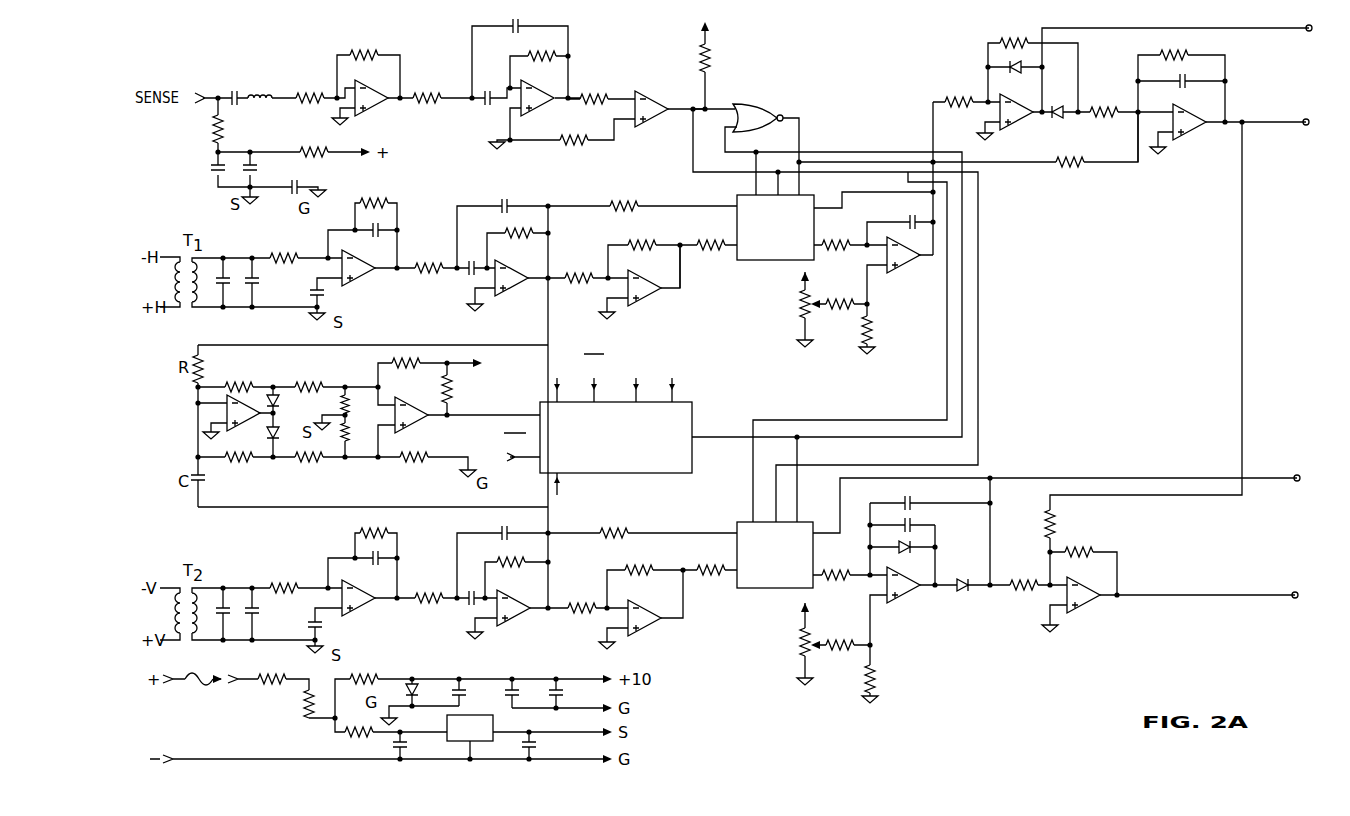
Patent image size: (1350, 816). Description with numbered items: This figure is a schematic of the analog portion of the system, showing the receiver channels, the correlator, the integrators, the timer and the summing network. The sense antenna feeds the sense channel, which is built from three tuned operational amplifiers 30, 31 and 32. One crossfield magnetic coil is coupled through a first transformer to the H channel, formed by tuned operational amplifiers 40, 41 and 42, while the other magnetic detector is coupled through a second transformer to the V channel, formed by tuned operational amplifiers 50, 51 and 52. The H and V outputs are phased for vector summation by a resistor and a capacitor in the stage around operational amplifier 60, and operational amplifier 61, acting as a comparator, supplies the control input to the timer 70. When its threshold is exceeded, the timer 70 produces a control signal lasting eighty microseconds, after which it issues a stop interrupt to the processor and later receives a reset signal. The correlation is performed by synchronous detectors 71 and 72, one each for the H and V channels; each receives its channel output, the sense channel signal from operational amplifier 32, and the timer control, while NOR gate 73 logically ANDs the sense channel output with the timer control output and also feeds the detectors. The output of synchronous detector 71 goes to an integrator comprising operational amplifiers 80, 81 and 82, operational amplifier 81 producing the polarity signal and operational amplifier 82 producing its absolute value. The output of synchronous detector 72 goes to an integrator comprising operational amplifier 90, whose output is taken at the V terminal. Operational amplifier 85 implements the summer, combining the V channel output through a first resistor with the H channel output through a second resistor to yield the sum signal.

The tuned operational amplifier 30 is at (375, 110).
The tuned operational amplifier 31 is at (512, 108).
The tuned operational amplifier 32 is at (647, 101).
The tuned operational amplifier 40 is at (357, 283).
The tuned operational amplifier 41 is at (510, 292).
The tuned operational amplifier 42 is at (645, 300).
The tuned operational amplifier 50 is at (357, 613).
The tuned operational amplifier 51 is at (513, 623).
The tuned operational amplifier 52 is at (643, 630).
The operational amplifier 60 is at (243, 423).
The operational amplifier 61 is at (415, 427).
The timer 70 is at (699, 411).
The synchronous detector 71 is at (757, 262).
The synchronous detector 72 is at (736, 527).
The NOR gate 73 is at (748, 106).
The operational amplifier 80 is at (895, 272).
The operational amplifier 81 is at (1017, 122).
The operational amplifier 82 is at (1185, 141).
The operational amplifier 85 is at (1085, 612).
The operational amplifier 90 is at (897, 598).